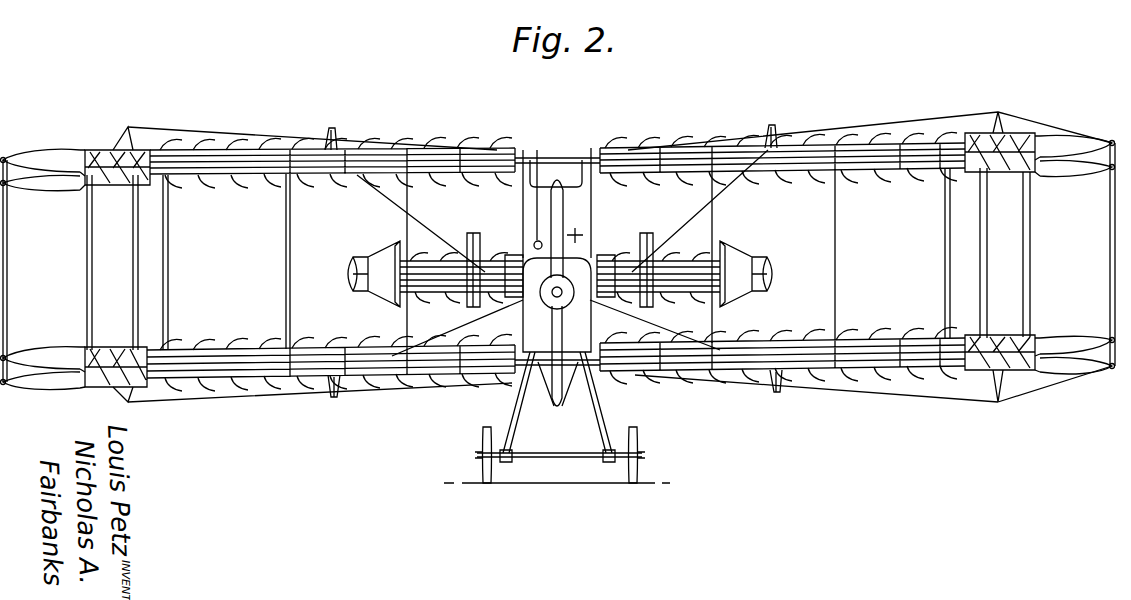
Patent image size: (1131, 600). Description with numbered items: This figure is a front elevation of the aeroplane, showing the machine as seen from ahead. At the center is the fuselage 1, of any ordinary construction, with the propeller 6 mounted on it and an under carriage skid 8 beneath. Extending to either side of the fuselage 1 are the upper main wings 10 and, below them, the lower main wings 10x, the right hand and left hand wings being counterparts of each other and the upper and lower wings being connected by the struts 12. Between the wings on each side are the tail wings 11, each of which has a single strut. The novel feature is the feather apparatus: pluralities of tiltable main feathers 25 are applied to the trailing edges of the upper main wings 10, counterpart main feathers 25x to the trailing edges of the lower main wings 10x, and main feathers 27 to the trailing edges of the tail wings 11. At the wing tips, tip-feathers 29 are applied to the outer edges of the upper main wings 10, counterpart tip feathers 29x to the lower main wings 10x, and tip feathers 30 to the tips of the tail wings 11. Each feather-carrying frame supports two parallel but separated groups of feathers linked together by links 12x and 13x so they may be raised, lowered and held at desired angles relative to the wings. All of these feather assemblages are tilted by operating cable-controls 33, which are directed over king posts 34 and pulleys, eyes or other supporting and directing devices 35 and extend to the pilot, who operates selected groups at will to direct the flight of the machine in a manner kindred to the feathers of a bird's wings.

The fuselage 1 is at (557, 250).
The propeller 6 is at (558, 411).
The under carriage skid 8 is at (597, 398).
The upper main wings 10 is at (394, 152).
The lower main wings 10x is at (401, 376).
The tail wings 11 is at (435, 258).
The struts 12 is at (170, 270).
The links 12x is at (8, 262).
The links 13x is at (352, 273).
The main feathers 25 is at (462, 143).
The main feathers 25x is at (240, 342).
The main feathers 27 is at (481, 240).
The tip-feathers 29 is at (58, 150).
The tip feathers 29x is at (60, 388).
The tip feathers 30 is at (365, 262).
The operating cable-controls 33 is at (205, 131).
The king posts 34 is at (338, 136).
The supporting and directing devices 35 is at (128, 126).